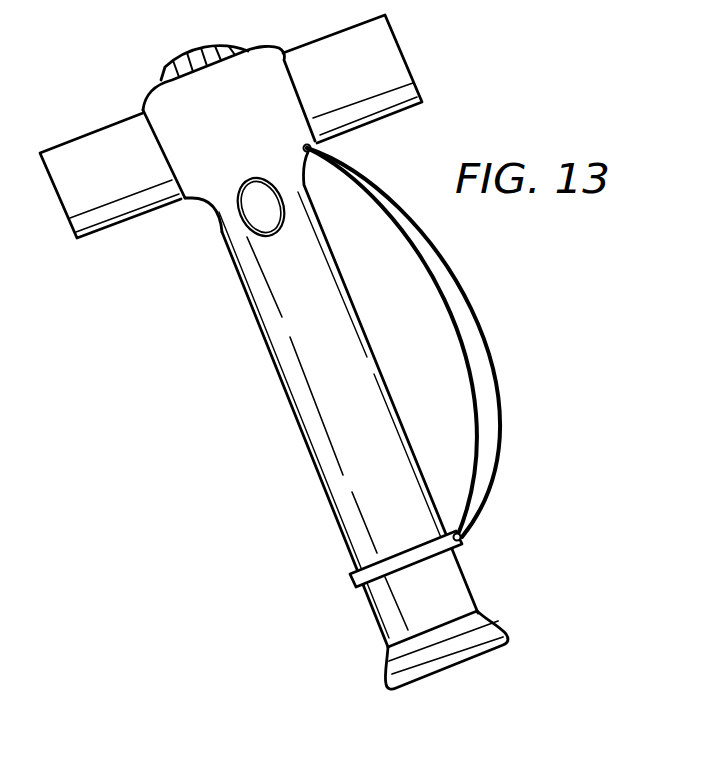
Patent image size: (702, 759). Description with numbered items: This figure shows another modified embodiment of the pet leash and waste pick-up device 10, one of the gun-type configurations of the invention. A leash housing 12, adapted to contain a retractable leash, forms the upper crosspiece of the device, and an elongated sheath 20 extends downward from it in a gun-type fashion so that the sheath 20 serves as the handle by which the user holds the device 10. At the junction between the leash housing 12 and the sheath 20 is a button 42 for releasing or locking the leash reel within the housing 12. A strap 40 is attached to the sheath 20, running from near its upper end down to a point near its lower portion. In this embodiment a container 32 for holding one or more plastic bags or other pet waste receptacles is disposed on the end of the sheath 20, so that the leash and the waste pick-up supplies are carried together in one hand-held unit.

The pet leash and waste pick-up device 10 is at (262, 425).
The leash housing 12 is at (95, 150).
The sheath 20 is at (400, 475).
The container 32 is at (397, 631).
The strap 40 is at (477, 309).
The button 42 is at (259, 208).